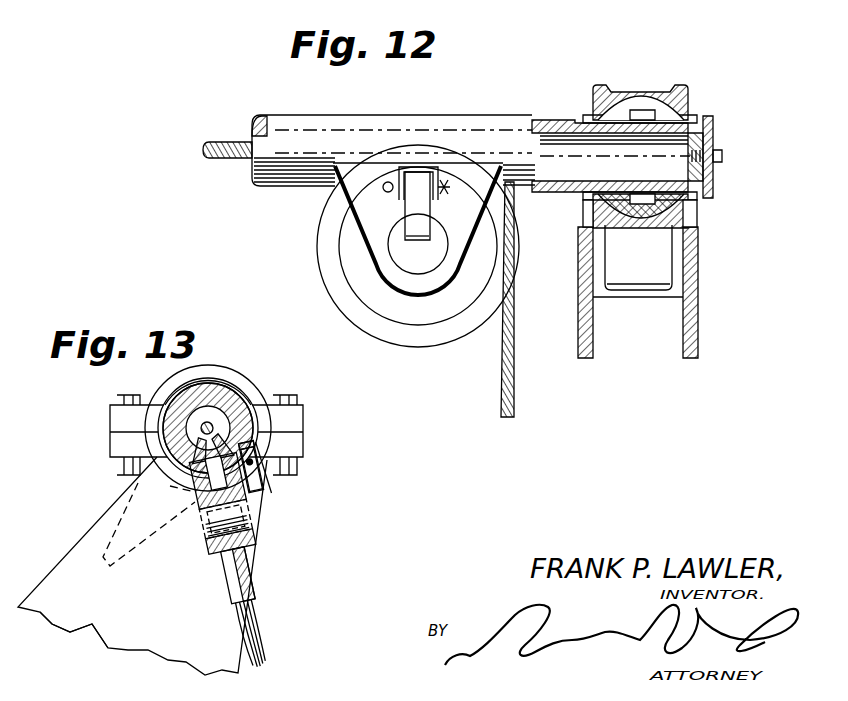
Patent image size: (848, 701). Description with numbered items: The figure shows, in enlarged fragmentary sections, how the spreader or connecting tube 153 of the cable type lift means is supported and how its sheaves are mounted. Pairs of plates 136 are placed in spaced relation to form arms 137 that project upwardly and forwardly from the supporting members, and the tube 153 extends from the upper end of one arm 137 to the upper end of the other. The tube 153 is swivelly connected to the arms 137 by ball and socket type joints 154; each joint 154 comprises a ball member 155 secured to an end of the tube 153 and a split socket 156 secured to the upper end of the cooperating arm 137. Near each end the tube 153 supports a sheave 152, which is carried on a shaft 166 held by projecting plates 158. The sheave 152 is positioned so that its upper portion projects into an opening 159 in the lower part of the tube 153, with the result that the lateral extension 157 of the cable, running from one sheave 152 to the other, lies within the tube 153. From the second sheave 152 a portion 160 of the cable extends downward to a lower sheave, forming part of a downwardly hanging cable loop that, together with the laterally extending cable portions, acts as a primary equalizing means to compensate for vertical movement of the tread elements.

In FIG. 12, the plates 136 is at (652, 297).
In FIG. 13, the plates 136 is at (74, 612).
In FIG. 12, the arm 137 is at (709, 347).
In FIG. 13, the arm 137 is at (53, 552).
In FIG. 12, the sheave 152 is at (413, 328).
In FIG. 13, the sheave 152 is at (249, 597).
In FIG. 12, the spreader or connecting tube 153 is at (440, 125).
In FIG. 13, the spreader or connecting tube 153 is at (180, 415).
In FIG. 12, the ball and socket type joint 154 is at (646, 78).
In FIG. 13, the ball and socket type joint 154 is at (259, 369).
In FIG. 12, the ball member 155 is at (688, 112).
In FIG. 12, the split socket 156 is at (711, 216).
In FIG. 13, the split socket 156 is at (279, 488).
In FIG. 12, the lateral extension of the cable 157 is at (232, 142).
In FIG. 13, the lateral extension of the cable 157 is at (208, 422).
In FIG. 12, the projecting plates 158 is at (352, 212).
In FIG. 13, the projecting plates 158 is at (187, 480).
In FIG. 13, the opening 159 is at (240, 424).
In FIG. 12, the cable portion 160 is at (509, 385).
In FIG. 13, the cable portion 160 is at (257, 643).
In FIG. 12, the shaft 166 is at (436, 246).
In FIG. 13, the shaft 166 is at (231, 528).